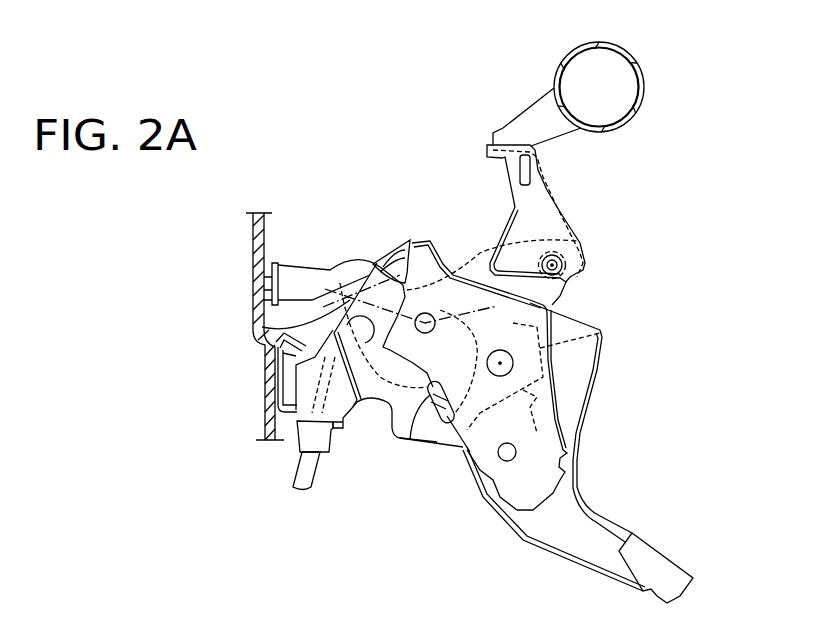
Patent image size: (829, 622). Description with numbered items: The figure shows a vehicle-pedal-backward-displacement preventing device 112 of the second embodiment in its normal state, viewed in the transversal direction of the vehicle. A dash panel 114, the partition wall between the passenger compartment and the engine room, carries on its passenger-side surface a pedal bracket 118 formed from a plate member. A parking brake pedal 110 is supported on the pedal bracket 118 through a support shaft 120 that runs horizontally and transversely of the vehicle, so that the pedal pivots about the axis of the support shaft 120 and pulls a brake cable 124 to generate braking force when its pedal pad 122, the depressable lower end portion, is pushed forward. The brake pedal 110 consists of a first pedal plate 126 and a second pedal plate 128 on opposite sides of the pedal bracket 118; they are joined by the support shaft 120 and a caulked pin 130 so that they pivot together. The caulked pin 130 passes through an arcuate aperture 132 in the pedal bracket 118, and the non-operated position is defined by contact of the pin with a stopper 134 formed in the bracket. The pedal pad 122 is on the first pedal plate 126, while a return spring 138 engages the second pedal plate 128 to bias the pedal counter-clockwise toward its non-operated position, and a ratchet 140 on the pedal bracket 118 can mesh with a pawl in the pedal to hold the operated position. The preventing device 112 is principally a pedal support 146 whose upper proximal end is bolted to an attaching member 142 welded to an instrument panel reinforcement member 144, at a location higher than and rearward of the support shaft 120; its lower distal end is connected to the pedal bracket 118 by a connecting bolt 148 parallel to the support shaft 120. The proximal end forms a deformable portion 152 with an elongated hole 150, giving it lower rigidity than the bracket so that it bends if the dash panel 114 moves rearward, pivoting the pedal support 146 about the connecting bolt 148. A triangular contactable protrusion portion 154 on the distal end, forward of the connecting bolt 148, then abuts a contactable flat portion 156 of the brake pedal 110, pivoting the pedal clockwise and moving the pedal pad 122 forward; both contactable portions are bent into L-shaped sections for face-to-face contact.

The parking brake pedal 110 is at (521, 552).
The vehicle-pedal-backward-displacement preventing device 112 is at (706, 84).
The dash panel 114 is at (253, 238).
The pedal bracket 118 is at (313, 269).
The support shaft 120 is at (382, 266).
The pedal pad 122 is at (665, 555).
The brake cable 124 is at (253, 310).
The first pedal plate 126 is at (575, 418).
The second pedal plate 128 is at (540, 470).
The caulked pin 130 is at (540, 380).
The arcuate aperture 132 is at (427, 403).
The stopper 134 is at (602, 334).
The return spring 138 is at (262, 335).
The ratchet 140 is at (438, 446).
The attaching member 142 is at (500, 128).
The instrument panel reinforcement member 144 is at (584, 43).
The pedal support 146 is at (555, 221).
The connecting bolt 148 is at (510, 271).
The elongated hole 150 is at (540, 178).
The deformable portion 152 is at (496, 166).
The contactable protrusion portion 154 is at (492, 255).
The contactable flat portion 156 is at (477, 262).